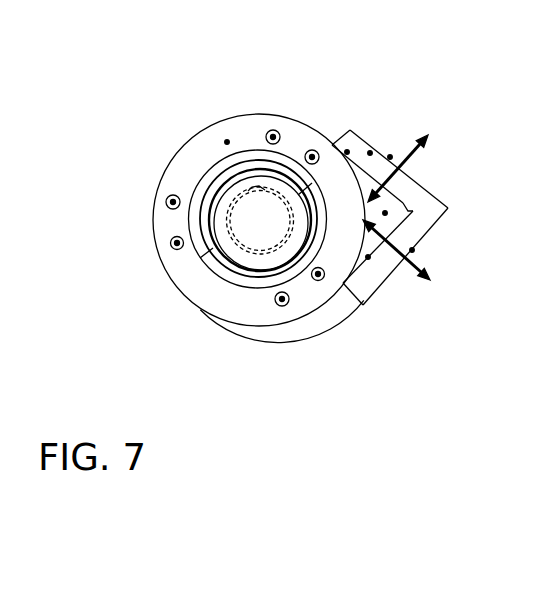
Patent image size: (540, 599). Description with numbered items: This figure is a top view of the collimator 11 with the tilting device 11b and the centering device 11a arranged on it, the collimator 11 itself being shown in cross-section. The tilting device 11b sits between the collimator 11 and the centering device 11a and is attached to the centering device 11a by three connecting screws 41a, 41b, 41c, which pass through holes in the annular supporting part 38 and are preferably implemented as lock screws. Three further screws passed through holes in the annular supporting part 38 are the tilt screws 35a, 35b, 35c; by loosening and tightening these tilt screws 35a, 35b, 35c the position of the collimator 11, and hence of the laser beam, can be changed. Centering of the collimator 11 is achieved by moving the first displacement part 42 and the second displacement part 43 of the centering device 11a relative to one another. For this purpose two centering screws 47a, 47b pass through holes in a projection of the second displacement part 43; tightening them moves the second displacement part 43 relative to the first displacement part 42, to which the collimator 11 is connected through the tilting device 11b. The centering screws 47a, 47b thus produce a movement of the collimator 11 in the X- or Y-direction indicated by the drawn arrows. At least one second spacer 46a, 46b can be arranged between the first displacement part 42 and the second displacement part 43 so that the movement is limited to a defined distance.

The collimator 11 is at (258, 233).
The centering device 11a is at (370, 153).
The tilting device 11b is at (227, 142).
The tilt screw 35a is at (170, 243).
The tilt screw 35b is at (318, 281).
The tilt screw 35c is at (273, 130).
The annular supporting part 38 is at (193, 162).
The connecting screw 41a is at (166, 200).
The connecting screw 41b is at (312, 150).
The connecting screw 41c is at (282, 306).
The first displacement part 42 is at (385, 213).
The second displacement part 43 is at (335, 312).
The second spacer 46a is at (368, 257).
The second spacer 46b is at (347, 152).
The centering screw 47a is at (390, 157).
The centering screw 47b is at (412, 250).